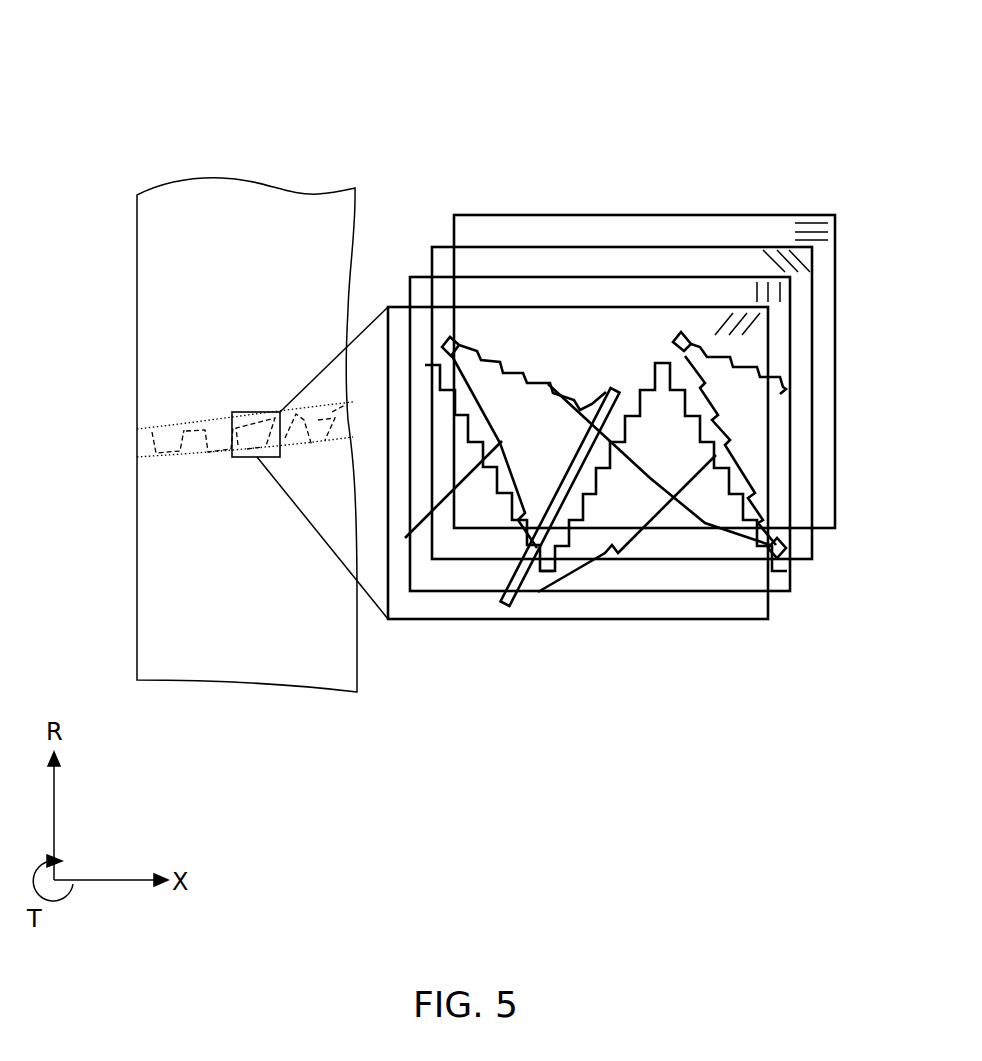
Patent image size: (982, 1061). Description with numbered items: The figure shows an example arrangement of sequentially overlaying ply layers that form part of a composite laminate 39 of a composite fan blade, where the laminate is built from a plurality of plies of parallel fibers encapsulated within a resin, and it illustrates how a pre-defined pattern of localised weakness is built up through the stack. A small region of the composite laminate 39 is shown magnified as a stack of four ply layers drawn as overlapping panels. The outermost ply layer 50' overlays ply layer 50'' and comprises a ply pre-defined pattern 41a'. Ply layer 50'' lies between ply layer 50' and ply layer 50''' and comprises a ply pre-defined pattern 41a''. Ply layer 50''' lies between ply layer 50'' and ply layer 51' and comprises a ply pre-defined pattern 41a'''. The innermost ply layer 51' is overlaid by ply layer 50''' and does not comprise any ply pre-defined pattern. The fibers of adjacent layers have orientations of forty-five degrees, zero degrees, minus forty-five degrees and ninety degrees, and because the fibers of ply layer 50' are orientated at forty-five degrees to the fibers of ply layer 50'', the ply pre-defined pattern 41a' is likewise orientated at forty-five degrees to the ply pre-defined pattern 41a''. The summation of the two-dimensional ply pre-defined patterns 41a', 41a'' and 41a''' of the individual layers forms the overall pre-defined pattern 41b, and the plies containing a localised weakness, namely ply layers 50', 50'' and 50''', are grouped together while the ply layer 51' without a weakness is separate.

The composite laminate 39 is at (258, 663).
The pre-defined pattern 41b is at (633, 95).
The ply pre-defined pattern 41a' is at (587, 356).
The ply pre-defined pattern 41a'' is at (606, 338).
The ply pre-defined pattern 41a''' is at (690, 332).
The ply layer 51' is at (668, 409).
The ply layer 50''' is at (665, 456).
The ply layer 50'' is at (626, 491).
The ply layer 50' is at (578, 527).